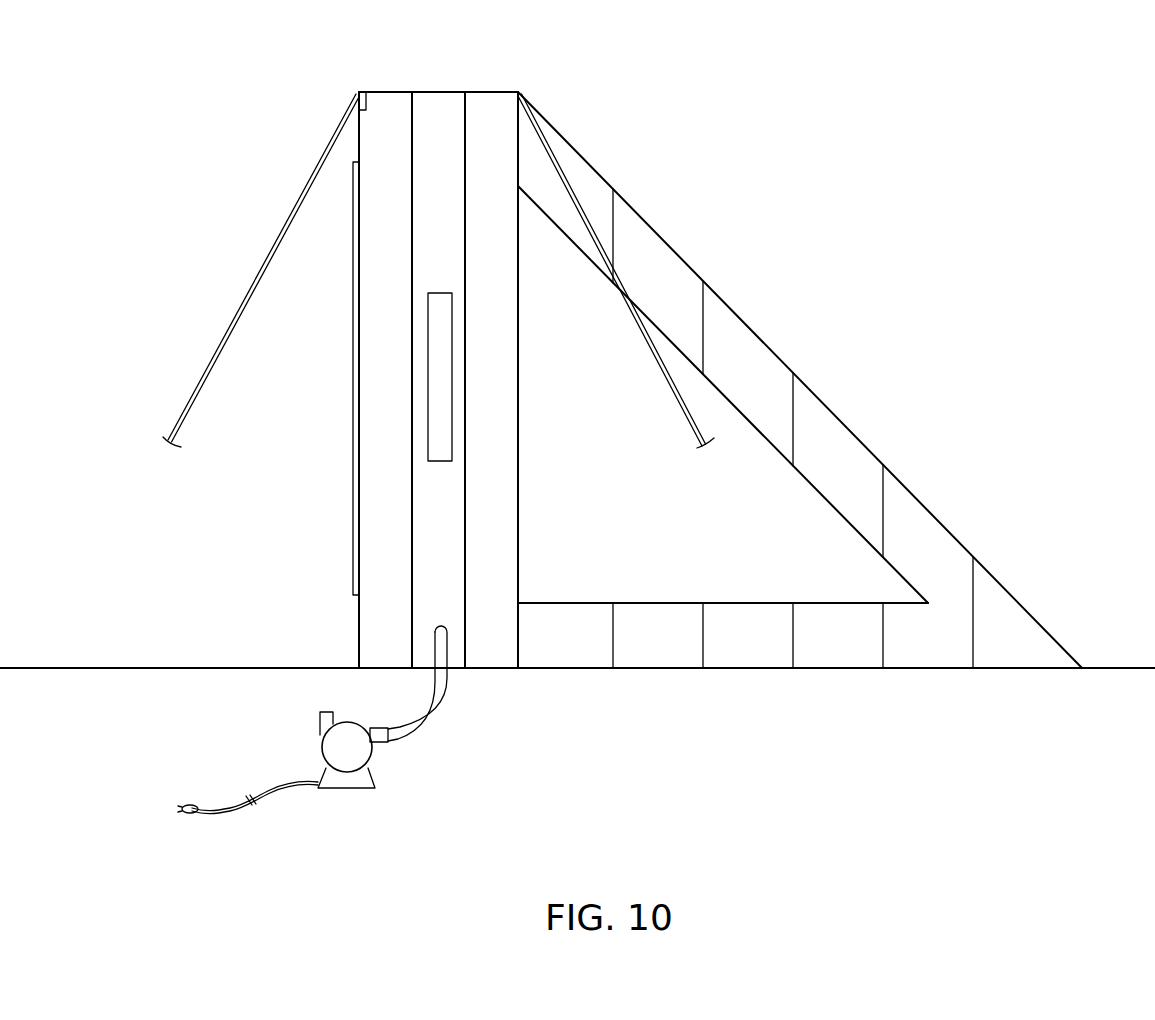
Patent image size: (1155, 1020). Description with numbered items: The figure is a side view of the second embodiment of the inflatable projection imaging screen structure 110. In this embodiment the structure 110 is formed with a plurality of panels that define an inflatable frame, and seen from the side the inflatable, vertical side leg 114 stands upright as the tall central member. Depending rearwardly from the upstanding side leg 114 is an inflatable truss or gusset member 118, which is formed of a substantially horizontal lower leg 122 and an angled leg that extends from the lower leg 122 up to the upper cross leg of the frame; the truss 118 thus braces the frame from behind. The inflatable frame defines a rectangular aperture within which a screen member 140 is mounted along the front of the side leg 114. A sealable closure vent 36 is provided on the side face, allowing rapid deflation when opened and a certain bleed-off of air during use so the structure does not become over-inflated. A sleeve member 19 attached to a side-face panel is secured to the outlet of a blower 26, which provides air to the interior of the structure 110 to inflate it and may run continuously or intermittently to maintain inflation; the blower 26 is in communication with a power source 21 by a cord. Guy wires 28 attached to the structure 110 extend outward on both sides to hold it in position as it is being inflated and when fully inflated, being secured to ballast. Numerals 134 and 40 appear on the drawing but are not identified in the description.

The inflatable projection imaging screen structure 110 is at (273, 107).
The inflatable vertical side leg 114 is at (439, 107).
The inflatable truss or gusset member 118 is at (870, 312).
The inner roof wall 134 is at (860, 448).
The lower leg 122 is at (781, 662).
The guy wire 28 is at (285, 230).
The screen member 140 is at (353, 352).
The tower wall 40 is at (354, 418).
The sealable closure vent 36 is at (435, 461).
The sleeve member 19 is at (438, 712).
The blower 26 is at (350, 790).
The power source 21 is at (228, 806).